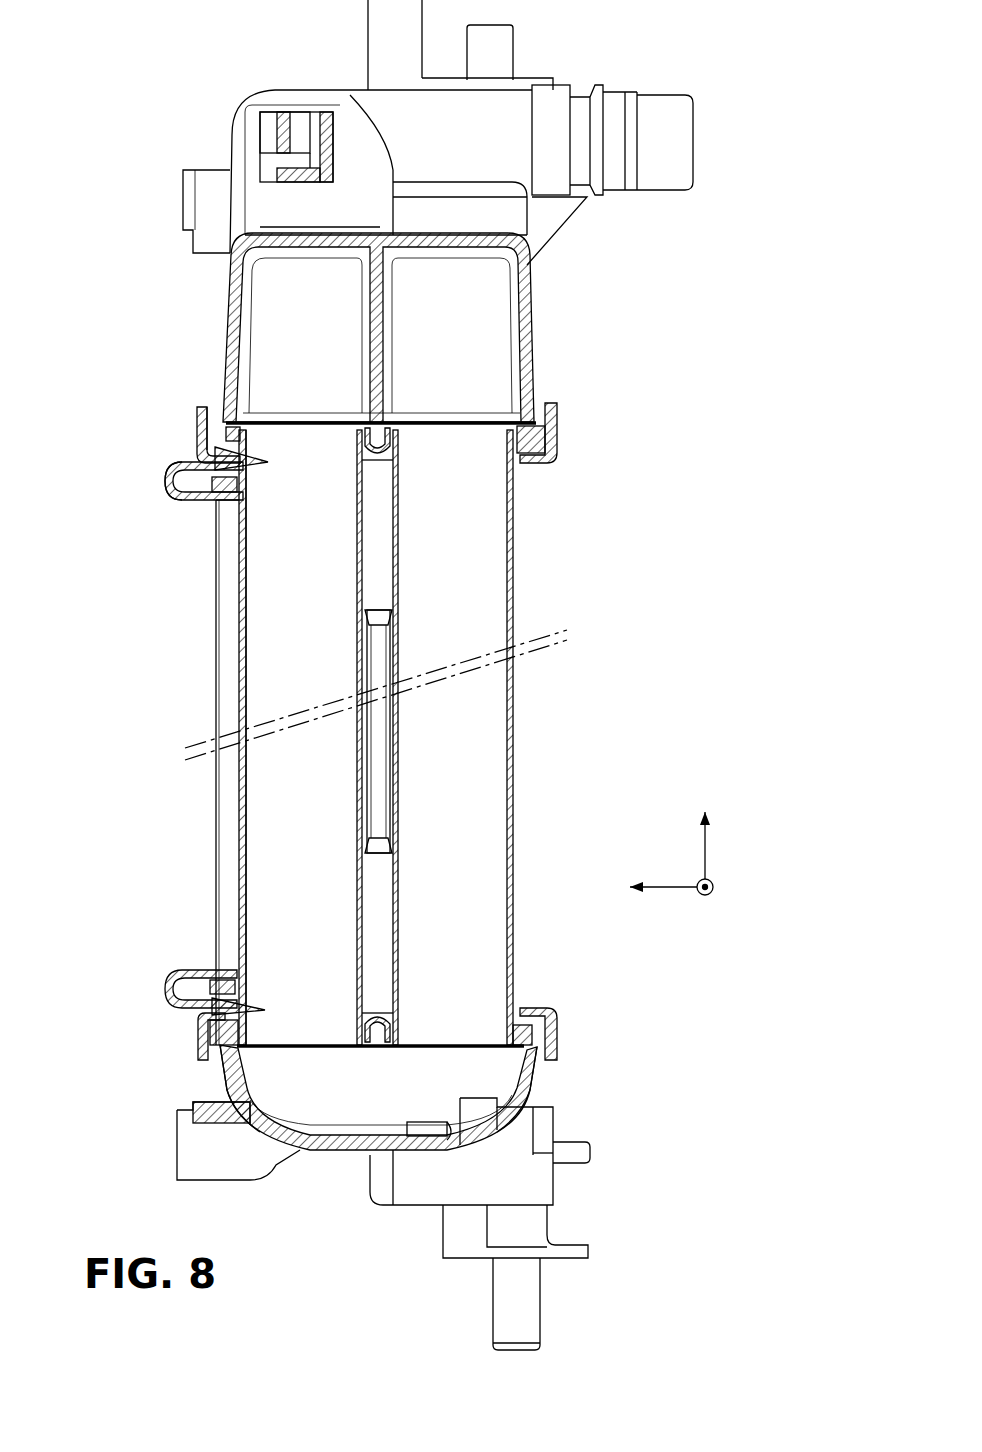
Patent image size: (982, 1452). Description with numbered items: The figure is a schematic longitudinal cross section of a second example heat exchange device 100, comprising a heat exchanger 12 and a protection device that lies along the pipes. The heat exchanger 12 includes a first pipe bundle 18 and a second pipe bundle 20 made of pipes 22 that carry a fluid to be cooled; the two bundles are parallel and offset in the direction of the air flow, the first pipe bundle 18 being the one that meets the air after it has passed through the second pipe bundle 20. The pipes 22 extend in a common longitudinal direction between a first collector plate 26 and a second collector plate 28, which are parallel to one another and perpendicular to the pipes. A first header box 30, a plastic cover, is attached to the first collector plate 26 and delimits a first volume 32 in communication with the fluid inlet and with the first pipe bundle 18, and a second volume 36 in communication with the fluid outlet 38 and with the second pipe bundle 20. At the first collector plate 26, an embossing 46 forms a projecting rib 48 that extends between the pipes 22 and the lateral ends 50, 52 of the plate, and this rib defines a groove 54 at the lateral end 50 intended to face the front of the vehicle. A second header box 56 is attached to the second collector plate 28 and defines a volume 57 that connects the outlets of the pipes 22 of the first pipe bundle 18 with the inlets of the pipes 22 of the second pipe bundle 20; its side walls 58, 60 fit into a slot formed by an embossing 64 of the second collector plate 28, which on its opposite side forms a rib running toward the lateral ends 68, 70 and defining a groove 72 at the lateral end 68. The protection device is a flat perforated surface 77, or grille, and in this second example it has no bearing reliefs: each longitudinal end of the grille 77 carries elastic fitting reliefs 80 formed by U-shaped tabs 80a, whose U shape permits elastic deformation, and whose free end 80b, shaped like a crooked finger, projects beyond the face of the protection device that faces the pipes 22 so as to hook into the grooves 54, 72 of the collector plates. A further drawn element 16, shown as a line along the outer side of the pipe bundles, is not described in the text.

The heat exchange device 100 is at (205, 90).
The heat exchanger 12 is at (627, 270).
The outer shell 16 is at (213, 815).
The first pipe bundle 18 is at (526, 547).
The second pipe bundle 20 is at (236, 670).
The pipes 22 is at (268, 595).
The first collector plate 26 is at (395, 455).
The second collector plate 28 is at (395, 1020).
The first header box 30 is at (347, 143).
The first volume 32 is at (432, 359).
The second volume 36 is at (295, 359).
The fluid outlet 38 is at (660, 112).
The embossing 46 is at (190, 451).
The projecting rib 48 is at (180, 496).
The lateral end 50 is at (190, 420).
The lateral end 52 is at (562, 434).
The groove 54 is at (232, 432).
The second header box 56 is at (330, 1150).
The volume 57 is at (362, 1103).
The side wall 58 is at (223, 1080).
The side wall 60 is at (533, 1065).
The embossing 64 is at (192, 1015).
The lateral end 68 is at (195, 1035).
The lateral end 70 is at (562, 1021).
The groove 72 is at (225, 1031).
The flat perforated surface 77 is at (227, 887).
The elastic fitting reliefs 80 is at (192, 502).
The U-shaped tabs 80a is at (168, 487).
The free end 80b is at (198, 447).